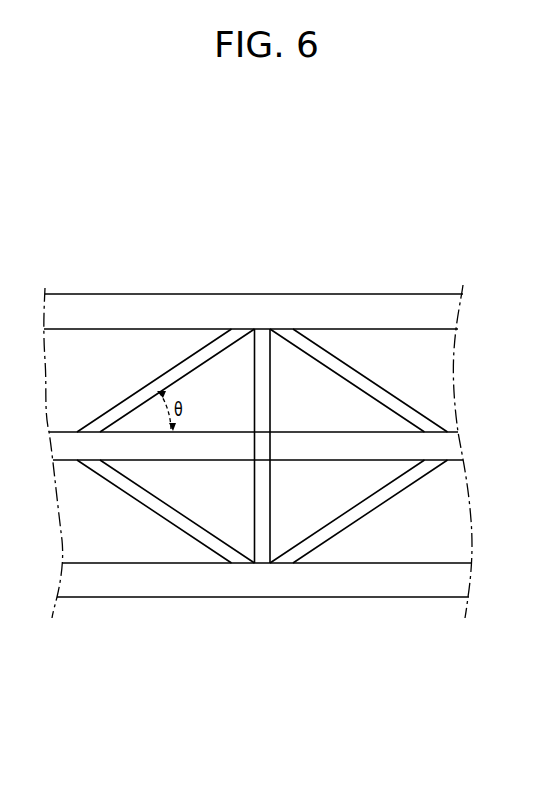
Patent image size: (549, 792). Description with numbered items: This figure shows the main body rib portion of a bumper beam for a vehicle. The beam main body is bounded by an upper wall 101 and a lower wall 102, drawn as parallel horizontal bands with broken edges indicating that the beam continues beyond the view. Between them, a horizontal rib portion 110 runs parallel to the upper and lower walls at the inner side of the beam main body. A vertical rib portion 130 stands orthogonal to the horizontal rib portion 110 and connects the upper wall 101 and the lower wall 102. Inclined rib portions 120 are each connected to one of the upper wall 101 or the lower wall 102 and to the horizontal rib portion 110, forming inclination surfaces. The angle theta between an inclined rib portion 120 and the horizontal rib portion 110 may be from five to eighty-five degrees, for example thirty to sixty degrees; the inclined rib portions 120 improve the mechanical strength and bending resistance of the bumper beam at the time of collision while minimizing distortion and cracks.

The upper wall of beam main body 101 is at (313, 306).
The lower wall of beam main body 102 is at (155, 582).
The horizontal rib portion 110 is at (350, 450).
The inclined rib portion 120 is at (202, 357).
The vertical rib portion 130 is at (262, 548).